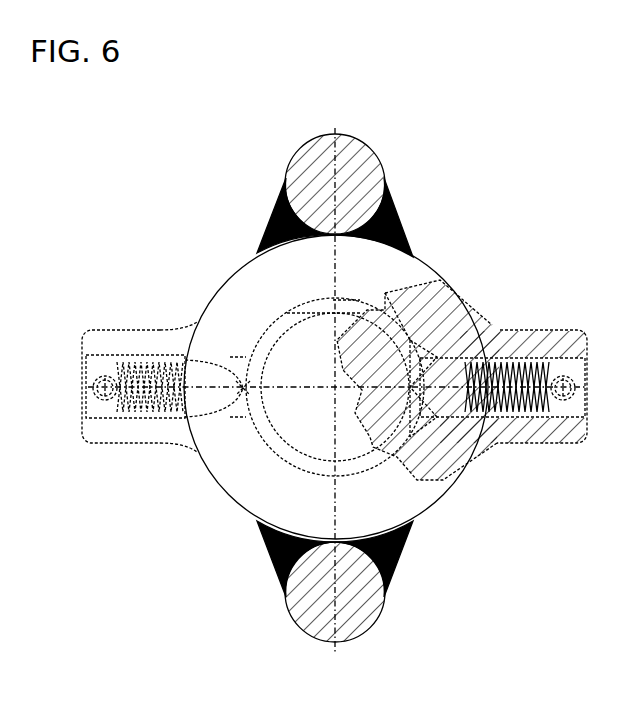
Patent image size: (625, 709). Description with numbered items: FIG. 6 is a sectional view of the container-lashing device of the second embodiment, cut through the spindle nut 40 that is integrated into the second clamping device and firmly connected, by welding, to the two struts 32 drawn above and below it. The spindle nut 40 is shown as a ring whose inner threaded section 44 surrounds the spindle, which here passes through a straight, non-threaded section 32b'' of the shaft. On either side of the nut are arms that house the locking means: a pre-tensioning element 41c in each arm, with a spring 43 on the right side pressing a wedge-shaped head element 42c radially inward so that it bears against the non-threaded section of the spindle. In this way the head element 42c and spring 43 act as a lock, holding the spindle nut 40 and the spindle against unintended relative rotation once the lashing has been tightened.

The struts 32 is at (363, 153).
The cam surface of roller 32b'' is at (420, 259).
The spindle nut 40 is at (186, 494).
The pre-tensioning element 41c is at (148, 359).
The wedge-shaped head element 42c is at (453, 373).
The spring 43 is at (518, 410).
The spindle nut threaded section 44 is at (290, 458).